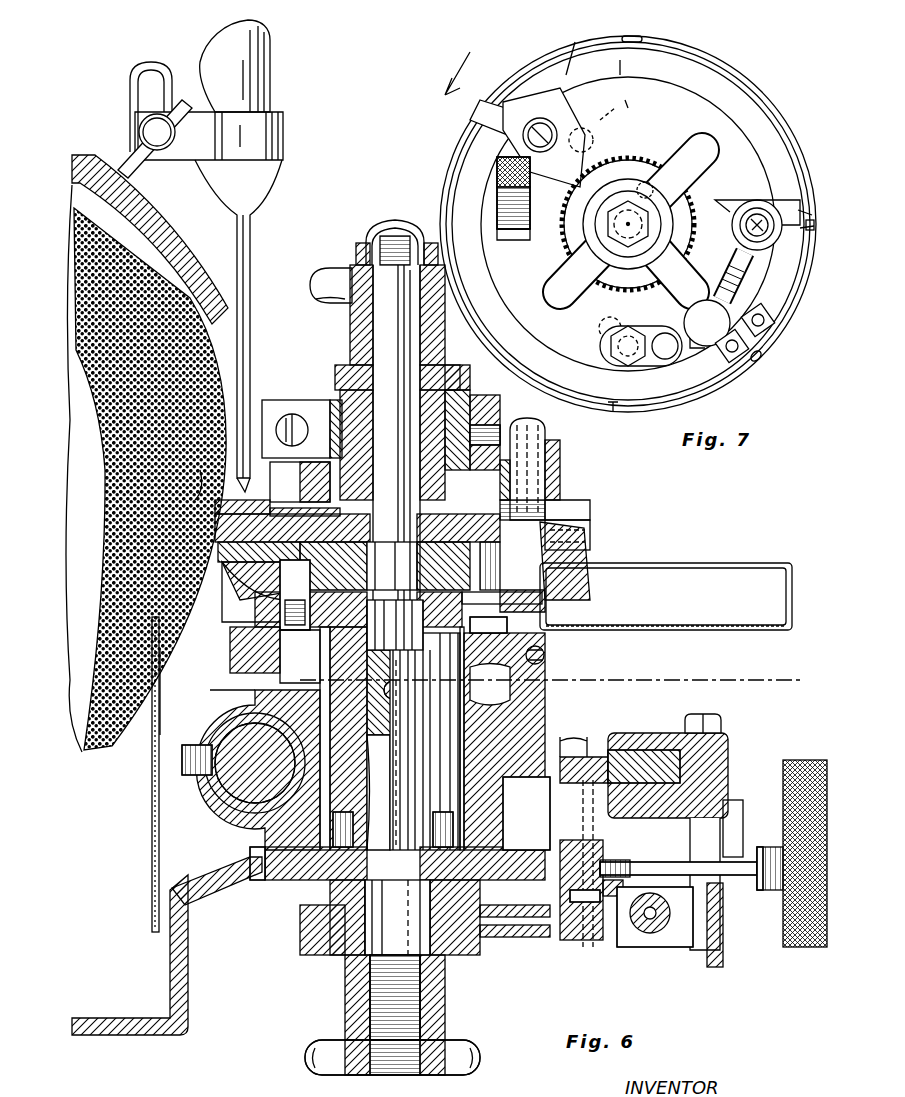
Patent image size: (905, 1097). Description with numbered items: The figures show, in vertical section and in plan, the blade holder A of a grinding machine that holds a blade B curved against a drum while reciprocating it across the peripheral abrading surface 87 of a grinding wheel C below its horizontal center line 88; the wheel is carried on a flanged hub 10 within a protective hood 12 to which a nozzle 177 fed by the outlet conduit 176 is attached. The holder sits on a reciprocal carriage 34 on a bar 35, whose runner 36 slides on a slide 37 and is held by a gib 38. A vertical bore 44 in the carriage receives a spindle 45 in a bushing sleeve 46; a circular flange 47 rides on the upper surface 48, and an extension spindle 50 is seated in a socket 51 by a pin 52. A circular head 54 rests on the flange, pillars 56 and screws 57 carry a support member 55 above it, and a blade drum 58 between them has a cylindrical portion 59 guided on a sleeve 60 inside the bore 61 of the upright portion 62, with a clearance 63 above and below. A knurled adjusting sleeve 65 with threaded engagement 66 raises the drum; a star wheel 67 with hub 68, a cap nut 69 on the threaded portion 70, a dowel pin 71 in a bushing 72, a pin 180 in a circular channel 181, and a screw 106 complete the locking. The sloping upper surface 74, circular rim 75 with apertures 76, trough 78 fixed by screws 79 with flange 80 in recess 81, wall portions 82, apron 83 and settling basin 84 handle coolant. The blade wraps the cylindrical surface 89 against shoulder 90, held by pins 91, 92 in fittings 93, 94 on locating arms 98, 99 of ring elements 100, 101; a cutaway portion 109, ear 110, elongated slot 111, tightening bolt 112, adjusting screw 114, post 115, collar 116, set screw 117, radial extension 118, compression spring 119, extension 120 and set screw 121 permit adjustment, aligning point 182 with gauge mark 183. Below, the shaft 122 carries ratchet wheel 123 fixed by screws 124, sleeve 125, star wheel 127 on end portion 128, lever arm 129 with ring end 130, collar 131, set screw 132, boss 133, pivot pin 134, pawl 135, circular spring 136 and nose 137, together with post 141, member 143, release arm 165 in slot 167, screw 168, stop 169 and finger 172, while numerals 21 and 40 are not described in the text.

In FIG. 6, the flanged hub 10 is at (92, 440).
In FIG. 6, the protective hood 12 is at (92, 158).
In FIG. 6, the adjusting knob 21 is at (810, 950).
In FIG. 6, the reciprocal carriage 34 is at (540, 702).
In FIG. 6, the bar 35 is at (255, 763).
In FIG. 6, the runner 36 is at (666, 752).
In FIG. 6, the slide 37 is at (634, 790).
In FIG. 6, the gib 38 is at (725, 745).
In FIG. 6, the set screw 40 is at (190, 775).
In FIG. 6, the vertical bore 44 is at (470, 730).
In FIG. 6, the spindle 45 is at (418, 800).
In FIG. 6, the bushing sleeve 46 is at (460, 758).
In FIG. 6, the circular flange 47 is at (446, 609).
In FIG. 6, the upper surface 48 is at (548, 635).
In FIG. 6, the extension spindle 50 is at (394, 382).
In FIG. 6, the socket 51 is at (395, 625).
In FIG. 6, the pin 52 is at (396, 675).
In FIG. 6, the circular head 54 is at (580, 568).
In FIG. 7, the circular head 54 is at (760, 78).
In FIG. 6, the support member 55 is at (556, 500).
In FIG. 7, the support member 55 is at (648, 82).
In FIG. 6, the pillars 56 is at (440, 596).
In FIG. 7, the pillars 56 is at (630, 150).
In FIG. 6, the screws 57 is at (492, 566).
In FIG. 7, the screws 57 is at (621, 101).
In FIG. 6, the blade backing member or drum 58 is at (560, 510).
In FIG. 7, the blade backing member or drum 58 is at (716, 62).
In FIG. 6, the central cylindrical portion 59 is at (452, 390).
In FIG. 6, the sleeve 60 is at (420, 447).
In FIG. 6, the bore 61 is at (495, 408).
In FIG. 6, the upright portion 62 is at (340, 478).
In FIG. 6, the clearance 63 is at (240, 508).
In FIG. 6, the adjusting sleeve 65 is at (338, 365).
In FIG. 7, the adjusting sleeve 65 is at (650, 170).
In FIG. 6, the threaded engagement 66 is at (340, 395).
In FIG. 6, the star wheel 67 is at (310, 296).
In FIG. 7, the star wheel 67 is at (700, 136).
In FIG. 6, the hub 68 is at (350, 330).
In FIG. 6, the cap nut 69 is at (358, 248).
In FIG. 7, the cap nut 69 is at (648, 208).
In FIG. 6, the reduced diameter threaded portion 70 is at (395, 220).
In FIG. 6, the dowel pin 71 is at (311, 608).
In FIG. 6, the bushing 72 is at (320, 566).
In FIG. 6, the upper surface 74 is at (443, 566).
In FIG. 6, the circular rim 75 is at (222, 552).
In FIG. 7, the circular rim 75 is at (793, 125).
In FIG. 6, the apertures 76 is at (226, 585).
In FIG. 7, the apertures 76 is at (762, 96).
In FIG. 6, the trough 78 is at (740, 630).
In FIG. 6, the screws 79 is at (545, 657).
In FIG. 6, the circular flange 80 is at (560, 613).
In FIG. 6, the circular channel or recess 81 is at (235, 618).
In FIG. 6, the wall portions 82 is at (792, 570).
In FIG. 6, the apron 83 is at (152, 758).
In FIG. 6, the settling basin 84 is at (120, 1018).
In FIG. 6, the peripheral abrading surface 87 is at (206, 382).
In FIG. 6, the horizontal center line 88 is at (200, 470).
In FIG. 6, the peripheral or cylindrical surface 89 is at (215, 530).
In FIG. 7, the peripheral or cylindrical surface 89 is at (685, 48).
In FIG. 6, the shoulder or top surface 90 is at (222, 547).
In FIG. 7, the pin 91 is at (492, 100).
In FIG. 6, the pin 92 is at (578, 532).
In FIG. 7, the pin 92 is at (816, 225).
In FIG. 7, the adjustable fitting 93 is at (526, 82).
In FIG. 6, the adjustable fitting 94 is at (580, 555).
In FIG. 7, the adjustable fitting 94 is at (806, 205).
In FIG. 7, the locating arm 98 is at (556, 115).
In FIG. 6, the locating arm 99 is at (545, 445).
In FIG. 7, the locating arm 99 is at (748, 203).
In FIG. 6, the ring element 100 is at (300, 490).
In FIG. 6, the ring element 101 is at (548, 482).
In FIG. 7, the screw 106 is at (590, 128).
In FIG. 7, the cutaway portion 109 is at (776, 270).
In FIG. 7, the ear 110 is at (680, 358).
In FIG. 7, the elongated slot 111 is at (657, 366).
In FIG. 7, the tightening bolt 112 is at (624, 366).
In FIG. 7, the adjusting screw 114 is at (782, 305).
In FIG. 7, the post 115 is at (675, 267).
In FIG. 6, the collar 116 is at (470, 402).
In FIG. 7, the collar 116 is at (655, 150).
In FIG. 6, the set screw 117 is at (500, 434).
In FIG. 6, the radial extension 118 is at (296, 404).
In FIG. 7, the radial extension 118 is at (488, 272).
In FIG. 7, the helical compression spring 119 is at (497, 168).
In FIG. 7, the extension 120 is at (500, 154).
In FIG. 6, the set screw 121 is at (282, 398).
In FIG. 7, the set screw 121 is at (504, 242).
In FIG. 6, the reduced diameter shaft 122 is at (397, 917).
In FIG. 6, the ratchet wheel 123 is at (270, 872).
In FIG. 6, the counter sunk screws 124 is at (330, 862).
In FIG. 6, the adjustable sleeve 125 is at (352, 936).
In FIG. 6, the star wheel 127 is at (446, 1025).
In FIG. 6, the reduced diameter end portion 128 is at (345, 1010).
In FIG. 6, the lever arm 129 is at (505, 926).
In FIG. 6, the ring-like end portion 130 is at (300, 932).
In FIG. 6, the knurled adjusting collar 131 is at (487, 975).
In FIG. 6, the set screw 132 is at (490, 965).
In FIG. 6, the boss 133 is at (625, 888).
In FIG. 6, the pivot pin 134 is at (605, 848).
In FIG. 6, the pawl 135 is at (628, 858).
In FIG. 6, the circular spring 136 is at (648, 935).
In FIG. 6, the nose 137 is at (590, 950).
In FIG. 6, the post 141 is at (575, 822).
In FIG. 6, the member 143 is at (526, 813).
In FIG. 6, the arm 165 is at (770, 892).
In FIG. 6, the slot 167 is at (745, 850).
In FIG. 6, the screw 168 is at (650, 950).
In FIG. 6, the stop 169 is at (690, 952).
In FIG. 6, the finger 172 is at (565, 942).
In FIG. 6, the outlet conduit 176 is at (270, 42).
In FIG. 6, the nozzle 177 is at (250, 268).
In FIG. 6, the pin 180 is at (312, 616).
In FIG. 6, the circular channel 181 is at (512, 645).
In FIG. 7, the point 182 is at (768, 365).
In FIG. 7, the gauge or index mark 183 is at (770, 335).
In FIG. 6, the blade holder A is at (572, 522).
In FIG. 7, the blade holder A is at (517, 59).
In FIG. 6, the blade B is at (580, 546).
In FIG. 7, the blade B is at (470, 135).
In FIG. 6, the grinding wheel C is at (82, 745).